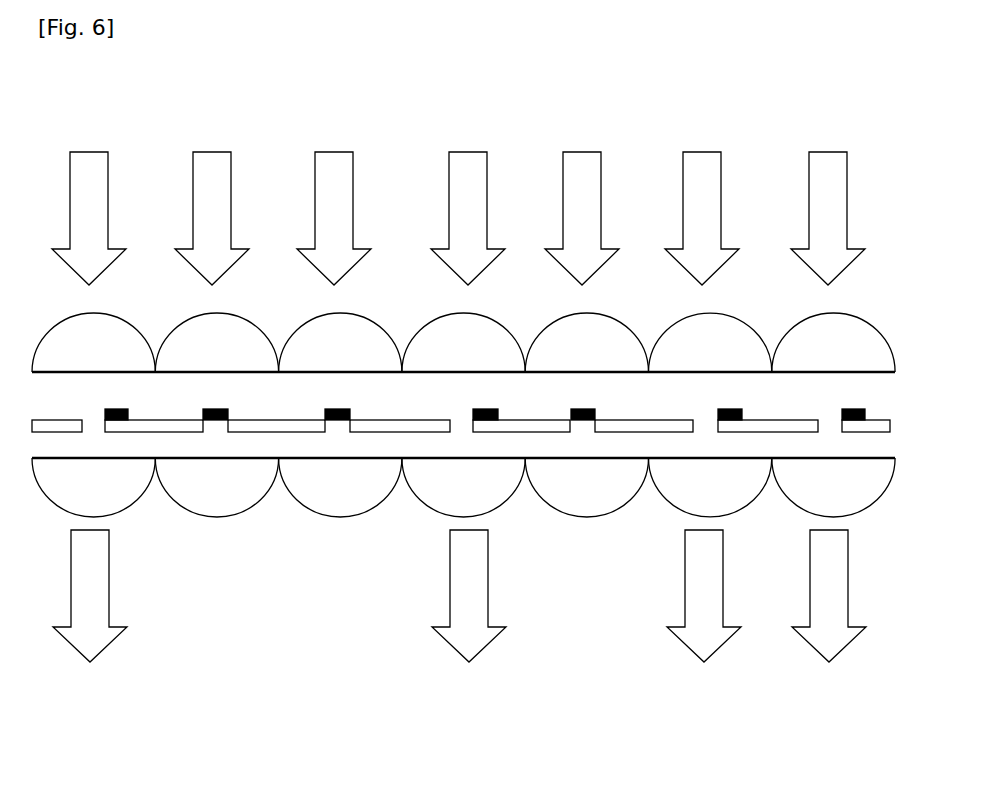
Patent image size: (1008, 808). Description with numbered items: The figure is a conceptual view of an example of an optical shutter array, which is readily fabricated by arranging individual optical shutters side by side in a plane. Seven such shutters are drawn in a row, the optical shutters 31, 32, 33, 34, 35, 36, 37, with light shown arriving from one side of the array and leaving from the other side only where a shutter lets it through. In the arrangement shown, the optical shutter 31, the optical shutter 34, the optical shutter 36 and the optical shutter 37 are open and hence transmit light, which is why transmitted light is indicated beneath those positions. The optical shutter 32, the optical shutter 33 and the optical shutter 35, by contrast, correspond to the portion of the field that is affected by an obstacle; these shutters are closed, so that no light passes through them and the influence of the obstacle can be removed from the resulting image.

The optical shutter 31 is at (100, 327).
The optical shutter 32 is at (227, 322).
The optical shutter 33 is at (347, 325).
The optical shutter 34 is at (455, 513).
The optical shutter 35 is at (580, 518).
The optical shutter 36 is at (677, 500).
The optical shutter 37 is at (807, 505).